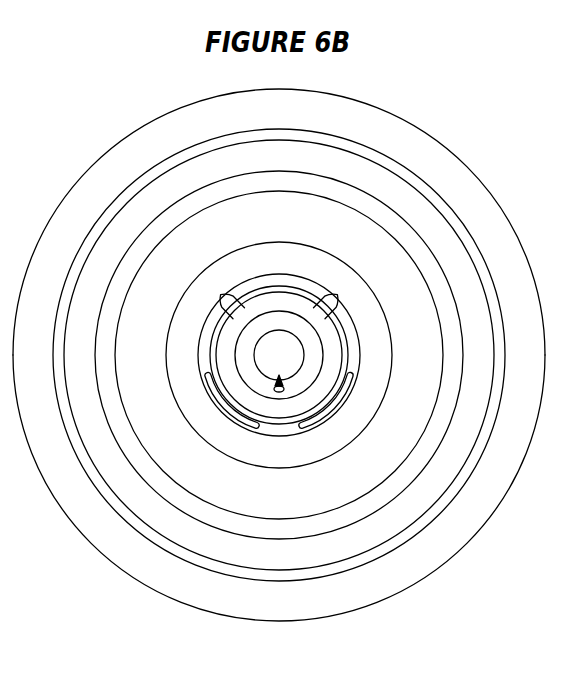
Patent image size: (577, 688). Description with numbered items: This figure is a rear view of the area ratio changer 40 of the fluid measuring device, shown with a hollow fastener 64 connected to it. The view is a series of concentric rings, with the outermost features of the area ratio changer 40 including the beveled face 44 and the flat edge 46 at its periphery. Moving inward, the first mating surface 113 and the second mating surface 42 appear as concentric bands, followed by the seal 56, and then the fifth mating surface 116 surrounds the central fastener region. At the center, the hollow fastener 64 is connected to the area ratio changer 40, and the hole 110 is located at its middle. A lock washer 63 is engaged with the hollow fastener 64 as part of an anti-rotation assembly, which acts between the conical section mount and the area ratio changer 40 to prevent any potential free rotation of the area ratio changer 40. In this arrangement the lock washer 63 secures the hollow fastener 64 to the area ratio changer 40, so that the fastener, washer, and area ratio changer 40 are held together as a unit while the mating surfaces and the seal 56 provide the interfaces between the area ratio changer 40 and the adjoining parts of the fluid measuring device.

The area ratio changer 40 is at (508, 604).
The second mating surface 42 is at (137, 209).
The beveled face 44 is at (157, 134).
The flat edge 46 is at (95, 552).
The seal 56 is at (402, 228).
The lock washer 63 is at (217, 316).
The hollow fastener 64 is at (337, 338).
The hole 110 is at (279, 392).
The first mating surface 113 is at (360, 152).
The fifth mating surface 116 is at (308, 270).